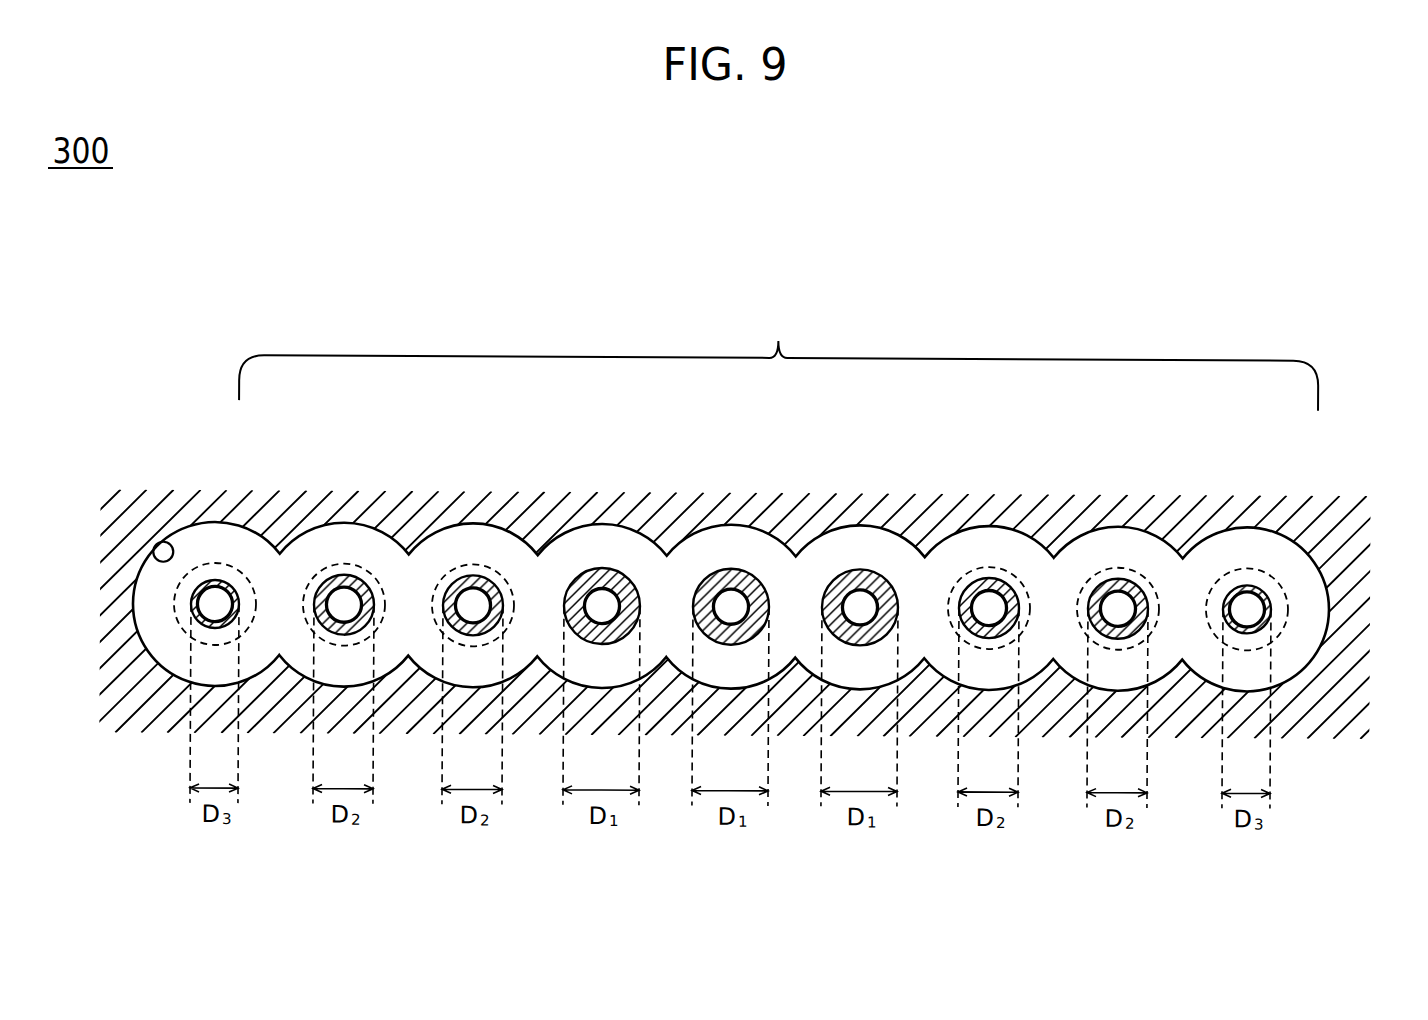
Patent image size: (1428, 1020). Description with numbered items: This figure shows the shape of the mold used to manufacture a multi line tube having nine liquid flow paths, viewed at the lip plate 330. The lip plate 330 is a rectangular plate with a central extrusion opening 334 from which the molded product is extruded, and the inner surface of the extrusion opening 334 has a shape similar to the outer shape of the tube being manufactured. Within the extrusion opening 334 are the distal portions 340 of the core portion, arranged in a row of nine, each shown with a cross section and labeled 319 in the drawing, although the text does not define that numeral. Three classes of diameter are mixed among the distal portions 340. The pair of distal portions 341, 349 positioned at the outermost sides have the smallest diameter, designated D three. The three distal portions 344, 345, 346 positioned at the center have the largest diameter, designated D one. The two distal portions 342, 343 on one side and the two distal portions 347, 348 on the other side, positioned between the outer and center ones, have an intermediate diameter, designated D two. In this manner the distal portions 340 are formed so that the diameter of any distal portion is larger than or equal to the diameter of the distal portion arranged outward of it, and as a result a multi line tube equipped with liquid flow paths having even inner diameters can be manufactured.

The heat pipe core / heating wire 319 is at (223, 587).
The lip plate 330 is at (1290, 503).
The extrusion opening 334 is at (143, 545).
The distal portion of the core portion 340 is at (779, 352).
The distal portion 341 is at (215, 579).
The distal portion 342 is at (344, 573).
The distal portion 343 is at (473, 573).
The distal portion 344 is at (602, 565).
The distal portion 345 is at (731, 565).
The distal portion 346 is at (860, 565).
The distal portion 347 is at (989, 573).
The distal portion 348 is at (1118, 573).
The distal portion 349 is at (1247, 579).